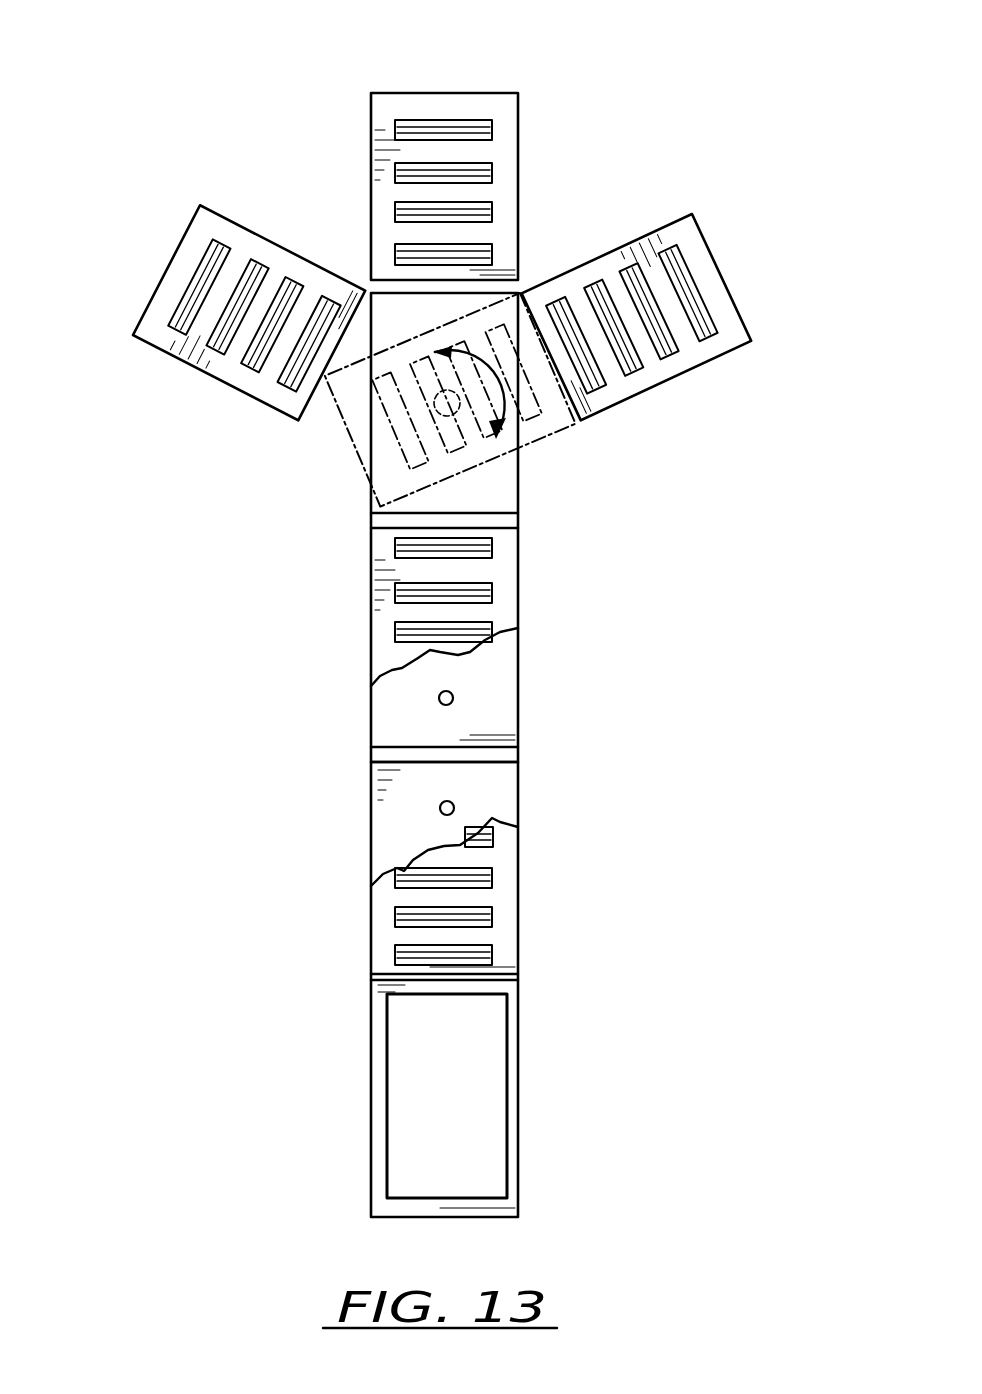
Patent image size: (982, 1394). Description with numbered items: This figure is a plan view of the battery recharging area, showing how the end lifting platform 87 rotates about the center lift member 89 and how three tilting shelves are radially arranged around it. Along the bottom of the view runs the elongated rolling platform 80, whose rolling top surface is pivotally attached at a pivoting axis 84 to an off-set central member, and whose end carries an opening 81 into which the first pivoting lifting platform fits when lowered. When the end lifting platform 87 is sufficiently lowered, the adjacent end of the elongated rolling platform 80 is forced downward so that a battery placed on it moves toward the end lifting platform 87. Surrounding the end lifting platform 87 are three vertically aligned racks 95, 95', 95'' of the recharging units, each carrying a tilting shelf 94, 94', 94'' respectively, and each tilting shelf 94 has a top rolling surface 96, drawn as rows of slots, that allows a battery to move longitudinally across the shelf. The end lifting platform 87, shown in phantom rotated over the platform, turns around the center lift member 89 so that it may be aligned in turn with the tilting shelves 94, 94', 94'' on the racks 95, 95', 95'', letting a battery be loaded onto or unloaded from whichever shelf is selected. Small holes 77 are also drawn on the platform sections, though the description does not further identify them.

The pivot holes 77 is at (453, 697).
The elongated rolling platform 80 is at (356, 730).
The opening 81 is at (462, 1108).
The pivoting axis 84 is at (408, 763).
The end lifting platform 87 is at (350, 440).
The center lift member 89 is at (478, 452).
The tilting shelf 94 is at (653, 317).
The tilting shelf 94' is at (444, 153).
The tilting shelf 94'' is at (220, 312).
The vertically aligned rack 95 is at (792, 286).
The vertically aligned rack 95' is at (532, 42).
The vertically aligned rack 95'' is at (130, 189).
The top rolling surface 96 is at (483, 168).